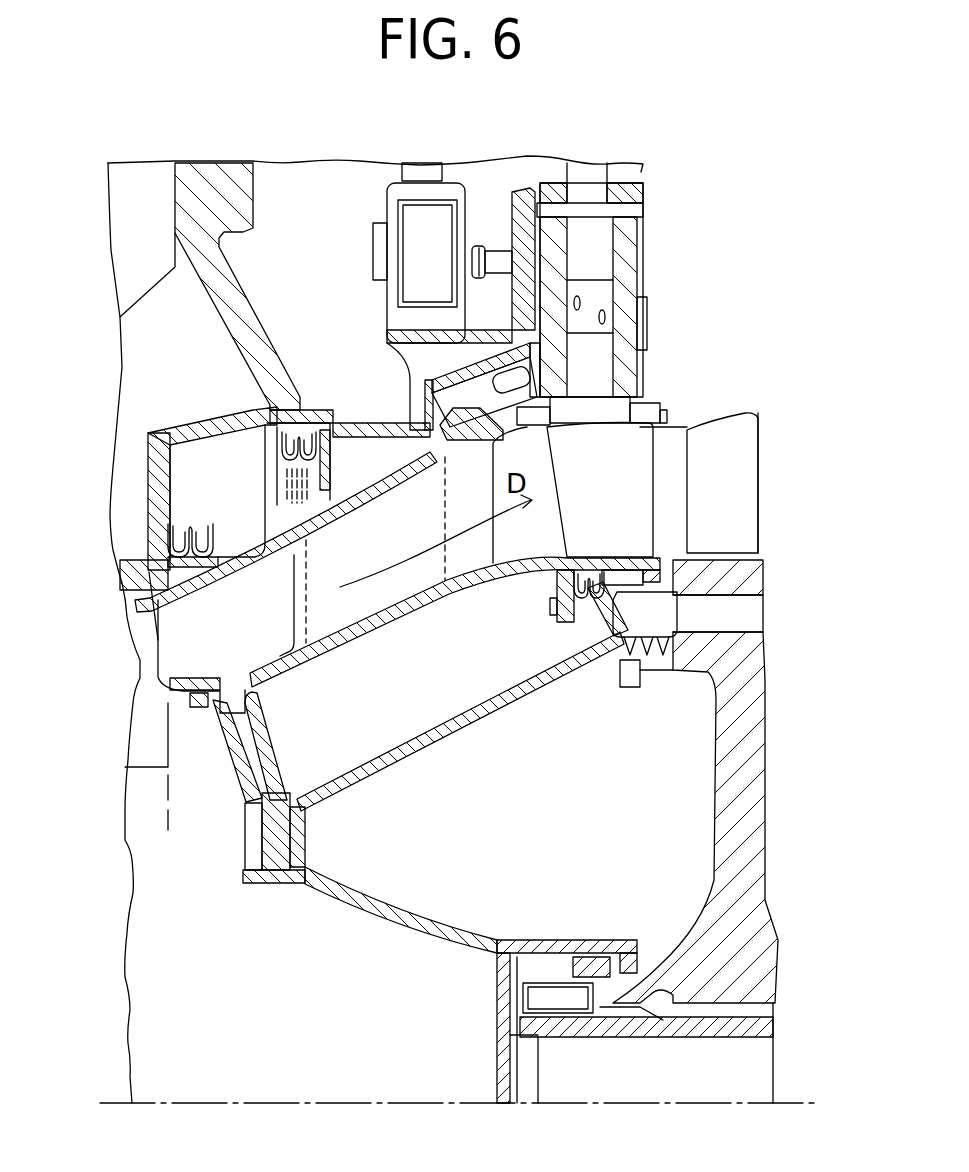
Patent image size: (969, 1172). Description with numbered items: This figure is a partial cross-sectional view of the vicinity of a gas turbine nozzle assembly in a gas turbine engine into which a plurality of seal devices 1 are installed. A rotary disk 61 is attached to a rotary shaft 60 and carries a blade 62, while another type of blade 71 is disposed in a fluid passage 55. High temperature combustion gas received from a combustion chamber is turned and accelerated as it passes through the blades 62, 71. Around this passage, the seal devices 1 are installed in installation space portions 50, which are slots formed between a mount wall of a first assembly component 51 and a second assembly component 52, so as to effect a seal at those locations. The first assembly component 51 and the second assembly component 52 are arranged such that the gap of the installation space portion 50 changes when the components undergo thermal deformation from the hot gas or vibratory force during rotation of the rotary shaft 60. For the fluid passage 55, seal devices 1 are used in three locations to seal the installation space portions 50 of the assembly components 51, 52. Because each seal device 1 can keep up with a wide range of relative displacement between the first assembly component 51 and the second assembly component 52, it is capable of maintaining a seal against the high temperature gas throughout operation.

The seal device 1 is at (271, 411).
The installation space portion 50 is at (168, 583).
The first assembly component 51 is at (158, 538).
The second assembly component 52 is at (343, 427).
The fluid passage 55 is at (238, 641).
The rotary shaft 60 is at (697, 1027).
The rotary disk 61 is at (745, 808).
The blade 62 is at (727, 497).
The blade 71 is at (593, 437).